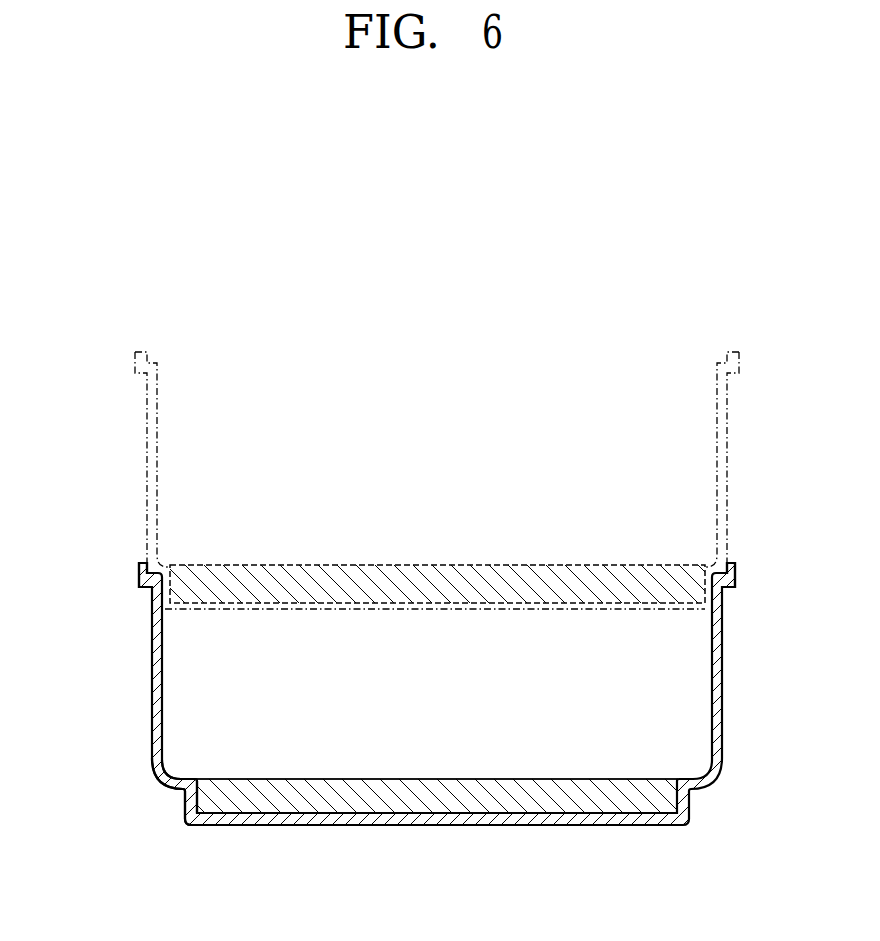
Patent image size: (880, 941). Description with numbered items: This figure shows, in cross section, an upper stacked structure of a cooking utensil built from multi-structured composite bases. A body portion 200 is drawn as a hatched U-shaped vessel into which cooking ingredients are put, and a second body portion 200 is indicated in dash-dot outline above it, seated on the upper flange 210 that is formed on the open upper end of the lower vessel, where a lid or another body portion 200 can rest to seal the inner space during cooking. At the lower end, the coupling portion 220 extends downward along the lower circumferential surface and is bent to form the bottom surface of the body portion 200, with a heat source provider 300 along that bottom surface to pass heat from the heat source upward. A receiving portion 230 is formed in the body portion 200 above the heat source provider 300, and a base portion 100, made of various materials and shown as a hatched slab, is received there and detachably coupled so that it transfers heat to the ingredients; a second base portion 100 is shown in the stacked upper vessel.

The base portion 100 is at (437, 580).
The body portion 200 is at (147, 441).
The upper flange 210 is at (139, 577).
The coupling portion 220 is at (185, 800).
The receiving portion 230 is at (190, 820).
The heat source provider 300 is at (365, 826).